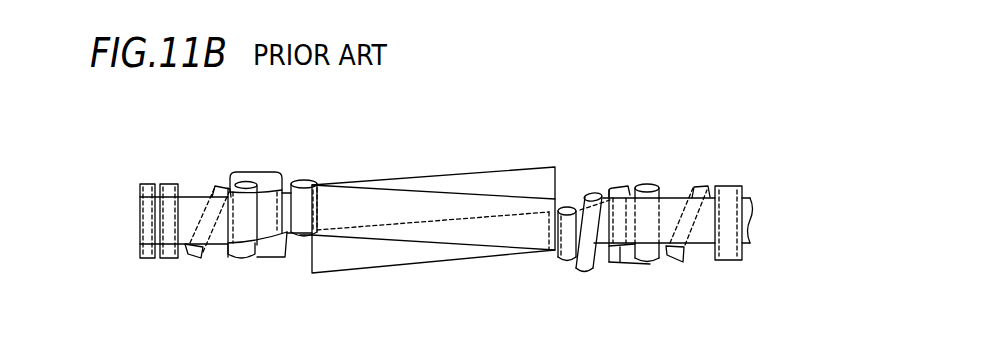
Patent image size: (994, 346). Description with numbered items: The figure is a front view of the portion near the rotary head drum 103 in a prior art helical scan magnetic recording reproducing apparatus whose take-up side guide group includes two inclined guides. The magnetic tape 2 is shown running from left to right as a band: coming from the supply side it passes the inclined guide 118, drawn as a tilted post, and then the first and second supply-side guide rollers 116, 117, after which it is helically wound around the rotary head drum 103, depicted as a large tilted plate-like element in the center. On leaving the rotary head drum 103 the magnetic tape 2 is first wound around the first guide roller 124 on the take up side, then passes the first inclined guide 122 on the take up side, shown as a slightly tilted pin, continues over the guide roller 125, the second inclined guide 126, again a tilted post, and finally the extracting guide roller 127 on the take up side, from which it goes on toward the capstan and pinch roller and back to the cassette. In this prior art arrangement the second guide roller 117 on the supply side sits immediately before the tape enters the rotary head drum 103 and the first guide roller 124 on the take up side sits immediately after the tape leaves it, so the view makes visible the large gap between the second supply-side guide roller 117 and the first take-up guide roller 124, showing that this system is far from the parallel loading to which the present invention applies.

The magnetic tape 2 is at (190, 210).
The rotary head drum 103 is at (468, 188).
The first guide roller on the supply side 116 is at (243, 254).
The second guide roller on the supply side 117 is at (300, 192).
The inclined guide on the supply side 118 is at (193, 258).
The first inclined guide on the take up side 122 is at (588, 248).
The first guide roller on the take up side 124 is at (565, 252).
The guide roller 125 is at (650, 182).
The inclined guide 126 is at (677, 260).
The extracting guide roller on the take up side 127 is at (728, 258).